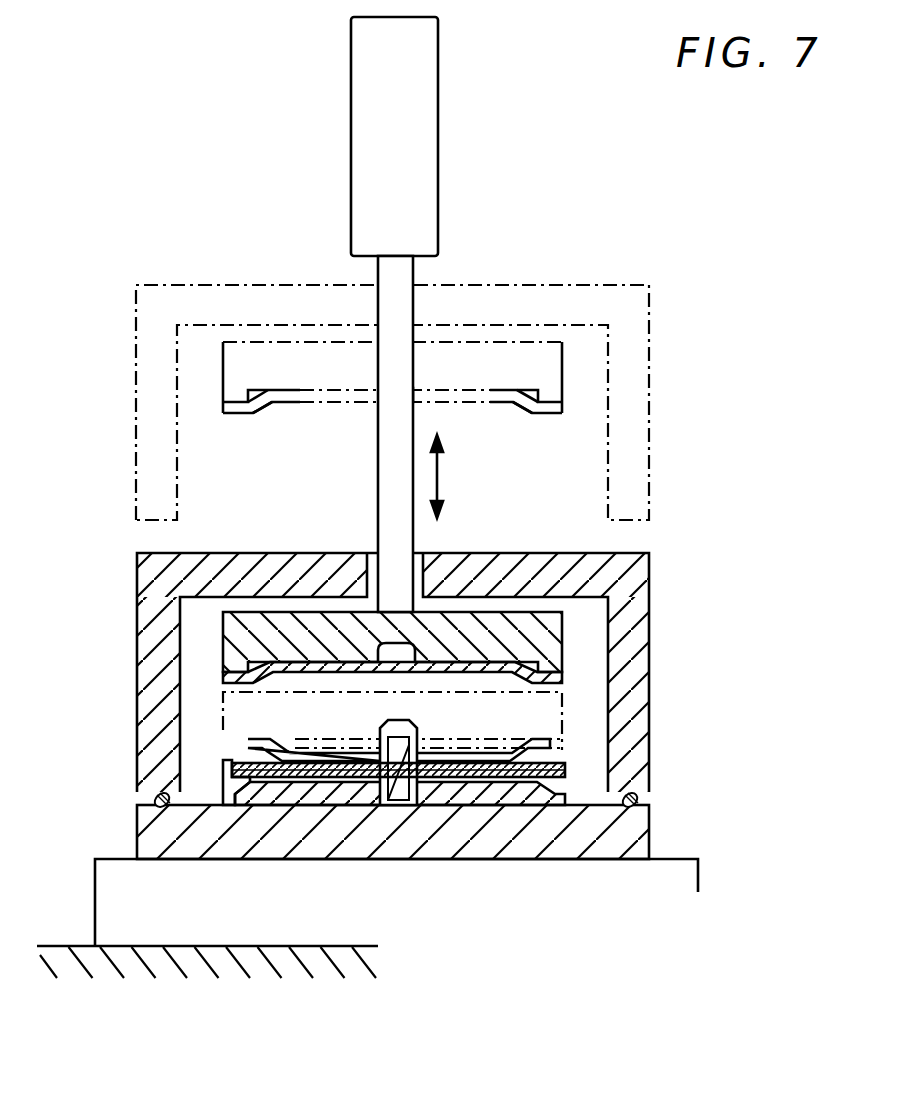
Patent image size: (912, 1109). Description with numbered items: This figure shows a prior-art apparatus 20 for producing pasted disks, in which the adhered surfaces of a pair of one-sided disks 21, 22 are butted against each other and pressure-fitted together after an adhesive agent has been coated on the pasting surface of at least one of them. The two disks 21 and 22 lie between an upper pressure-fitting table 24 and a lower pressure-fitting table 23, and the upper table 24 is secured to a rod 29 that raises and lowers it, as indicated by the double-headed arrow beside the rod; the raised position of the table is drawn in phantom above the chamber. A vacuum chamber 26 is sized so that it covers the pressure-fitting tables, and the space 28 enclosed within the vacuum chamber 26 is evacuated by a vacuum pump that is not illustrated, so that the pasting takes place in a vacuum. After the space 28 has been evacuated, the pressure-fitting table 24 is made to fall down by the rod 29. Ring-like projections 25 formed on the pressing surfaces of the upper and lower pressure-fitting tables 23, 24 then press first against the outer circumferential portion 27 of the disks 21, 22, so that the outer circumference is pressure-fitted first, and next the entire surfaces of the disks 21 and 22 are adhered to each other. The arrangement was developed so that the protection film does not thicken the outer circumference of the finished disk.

The apparatus for producing pasted disks 20 is at (674, 522).
The one-sided disk 21 is at (500, 757).
The one-sided disk 22 is at (310, 790).
The pressure-fitting table 23 is at (462, 828).
The pressure-fitting table 24 is at (527, 355).
The ring-like projection 25 is at (224, 770).
The vacuum chamber 26 is at (628, 371).
The outer circumferential portion 27 is at (224, 748).
The space 28 is at (565, 695).
The rod 29 is at (392, 482).